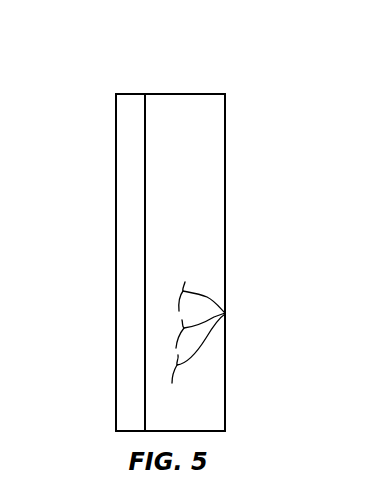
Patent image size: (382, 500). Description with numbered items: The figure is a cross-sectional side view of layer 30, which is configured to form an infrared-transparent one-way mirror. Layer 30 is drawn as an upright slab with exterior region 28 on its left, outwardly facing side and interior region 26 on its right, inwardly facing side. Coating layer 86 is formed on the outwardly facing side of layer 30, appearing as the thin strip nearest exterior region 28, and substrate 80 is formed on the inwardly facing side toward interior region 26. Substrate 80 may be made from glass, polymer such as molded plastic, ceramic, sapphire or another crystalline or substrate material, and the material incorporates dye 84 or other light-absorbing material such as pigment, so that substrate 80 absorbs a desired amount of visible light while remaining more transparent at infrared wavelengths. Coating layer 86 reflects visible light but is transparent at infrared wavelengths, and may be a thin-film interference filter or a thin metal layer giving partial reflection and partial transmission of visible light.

The layer 30 is at (181, 74).
The exterior region 28 is at (110, 111).
The interior region 26 is at (237, 111).
The substrate 80 is at (215, 179).
The coating layer 86 is at (127, 302).
The dye 84 is at (225, 313).